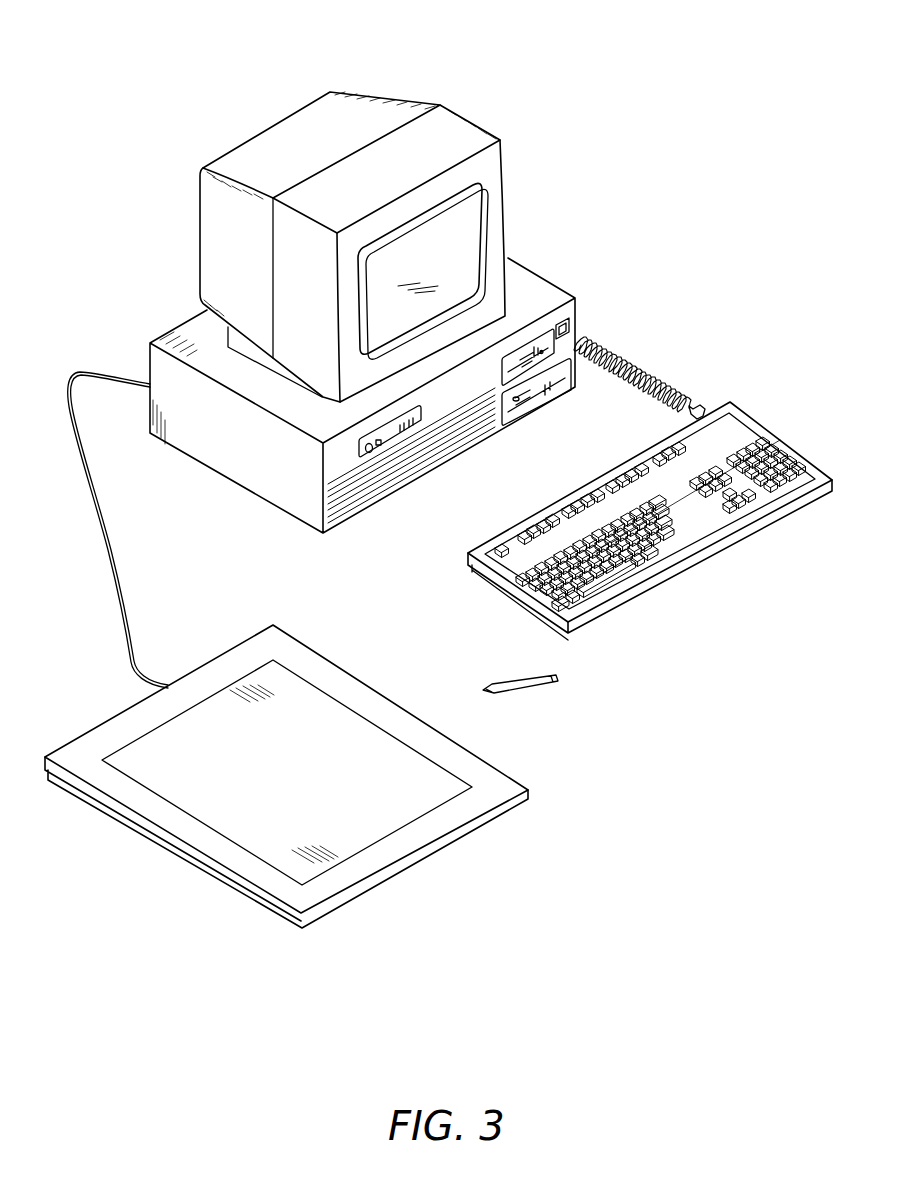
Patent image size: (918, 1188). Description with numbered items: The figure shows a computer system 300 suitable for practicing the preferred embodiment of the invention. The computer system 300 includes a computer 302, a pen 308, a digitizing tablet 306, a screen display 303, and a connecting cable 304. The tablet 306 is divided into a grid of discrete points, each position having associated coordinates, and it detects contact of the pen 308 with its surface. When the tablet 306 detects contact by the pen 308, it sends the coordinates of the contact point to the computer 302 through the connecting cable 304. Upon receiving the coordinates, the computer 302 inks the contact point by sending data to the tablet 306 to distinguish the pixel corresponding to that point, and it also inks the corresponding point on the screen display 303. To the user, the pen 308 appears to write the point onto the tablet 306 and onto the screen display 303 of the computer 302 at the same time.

The computer system 300 is at (210, 116).
The computer 302 is at (560, 289).
The screen display 303 is at (487, 228).
The connecting cable 304 is at (120, 607).
The digitizing tablet 306 is at (440, 853).
The pen 308 is at (563, 677).